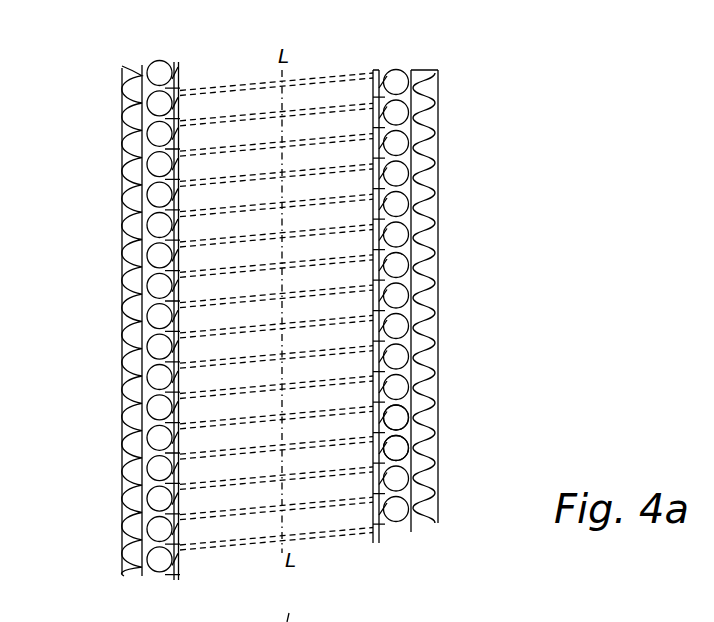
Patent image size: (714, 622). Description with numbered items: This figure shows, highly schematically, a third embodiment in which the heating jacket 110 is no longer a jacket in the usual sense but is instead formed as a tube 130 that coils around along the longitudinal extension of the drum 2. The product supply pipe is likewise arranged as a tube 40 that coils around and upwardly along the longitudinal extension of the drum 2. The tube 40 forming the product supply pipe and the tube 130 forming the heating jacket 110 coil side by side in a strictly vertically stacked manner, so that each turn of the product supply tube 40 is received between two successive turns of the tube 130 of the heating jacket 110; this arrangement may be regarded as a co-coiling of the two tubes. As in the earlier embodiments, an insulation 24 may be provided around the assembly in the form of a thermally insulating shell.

The drum 2 is at (374, 82).
The insulation 24 is at (128, 275).
The tube 130 is at (489, 425).
The heating jacket 110 is at (403, 420).
The tube 40 is at (481, 456).